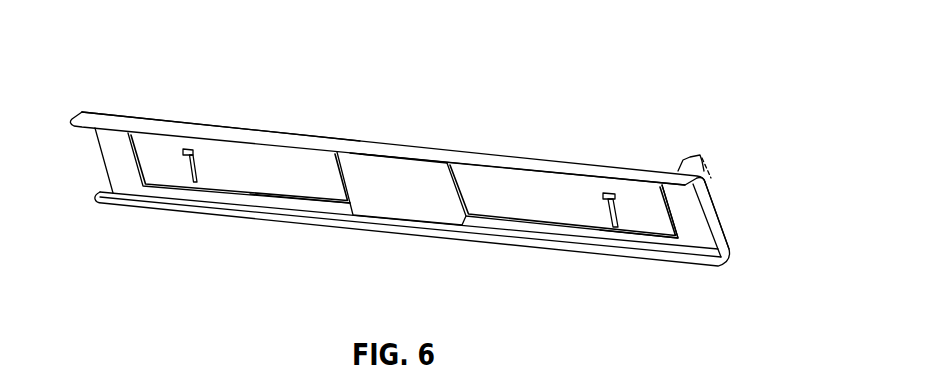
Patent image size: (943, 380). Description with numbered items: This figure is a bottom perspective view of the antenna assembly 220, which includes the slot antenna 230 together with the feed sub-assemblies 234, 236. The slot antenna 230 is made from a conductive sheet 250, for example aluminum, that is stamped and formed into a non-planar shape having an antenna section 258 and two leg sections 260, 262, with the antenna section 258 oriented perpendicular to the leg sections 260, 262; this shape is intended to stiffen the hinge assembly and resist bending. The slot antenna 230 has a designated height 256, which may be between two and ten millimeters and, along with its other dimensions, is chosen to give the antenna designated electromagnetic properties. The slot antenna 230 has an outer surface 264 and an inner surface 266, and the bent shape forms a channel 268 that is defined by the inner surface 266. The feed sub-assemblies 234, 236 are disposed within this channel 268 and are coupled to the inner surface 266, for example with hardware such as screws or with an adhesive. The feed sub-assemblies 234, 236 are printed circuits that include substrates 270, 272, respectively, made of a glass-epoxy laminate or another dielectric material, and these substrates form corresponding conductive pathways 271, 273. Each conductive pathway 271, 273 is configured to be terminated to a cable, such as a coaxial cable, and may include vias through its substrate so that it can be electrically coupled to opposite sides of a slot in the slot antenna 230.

The antenna assembly 220 is at (656, 141).
The slot antenna 230 is at (726, 238).
The feed sub-assembly 234 is at (577, 200).
The feed sub-assembly 236 is at (283, 170).
The conductive sheet 250 is at (606, 170).
The height 256 is at (697, 157).
The antenna section 258 is at (402, 197).
The leg section 260 is at (93, 112).
The leg section 262 is at (143, 207).
The outer surface 264 is at (453, 140).
The inner surface 266 is at (417, 194).
The channel 268 is at (443, 210).
The substrate 270 is at (647, 215).
The conductive pathway 271 is at (607, 213).
The substrate 272 is at (318, 177).
The conductive pathway 273 is at (197, 172).